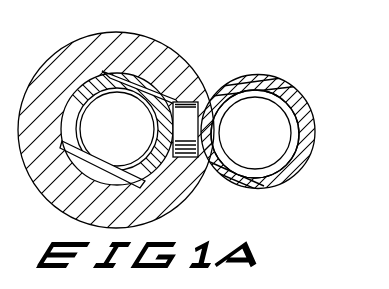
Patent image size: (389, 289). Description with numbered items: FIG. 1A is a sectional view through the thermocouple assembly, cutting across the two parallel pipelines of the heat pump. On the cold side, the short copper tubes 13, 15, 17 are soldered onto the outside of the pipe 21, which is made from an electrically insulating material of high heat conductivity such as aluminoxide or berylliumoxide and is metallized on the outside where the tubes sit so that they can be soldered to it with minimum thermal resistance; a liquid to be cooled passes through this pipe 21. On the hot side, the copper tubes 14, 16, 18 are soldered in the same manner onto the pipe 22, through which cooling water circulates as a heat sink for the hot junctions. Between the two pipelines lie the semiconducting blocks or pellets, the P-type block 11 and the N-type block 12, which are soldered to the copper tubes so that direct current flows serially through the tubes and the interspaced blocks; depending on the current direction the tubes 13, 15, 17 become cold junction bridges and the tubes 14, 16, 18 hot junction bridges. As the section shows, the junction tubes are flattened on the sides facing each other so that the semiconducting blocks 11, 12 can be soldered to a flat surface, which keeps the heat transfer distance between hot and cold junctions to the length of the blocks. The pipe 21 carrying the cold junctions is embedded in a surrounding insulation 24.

The semiconducting block 11 is at (200, 81).
The semiconducting block 12 is at (188, 118).
The copper tube 13 is at (178, 104).
The copper tube 14 is at (244, 103).
The copper tube 15 is at (178, 104).
The copper tube 16 is at (244, 103).
The copper tube 17 is at (178, 104).
The copper tube 18 is at (262, 80).
The pipe 21 is at (132, 93).
The pipe 22 is at (288, 117).
The insulation 24 is at (60, 72).